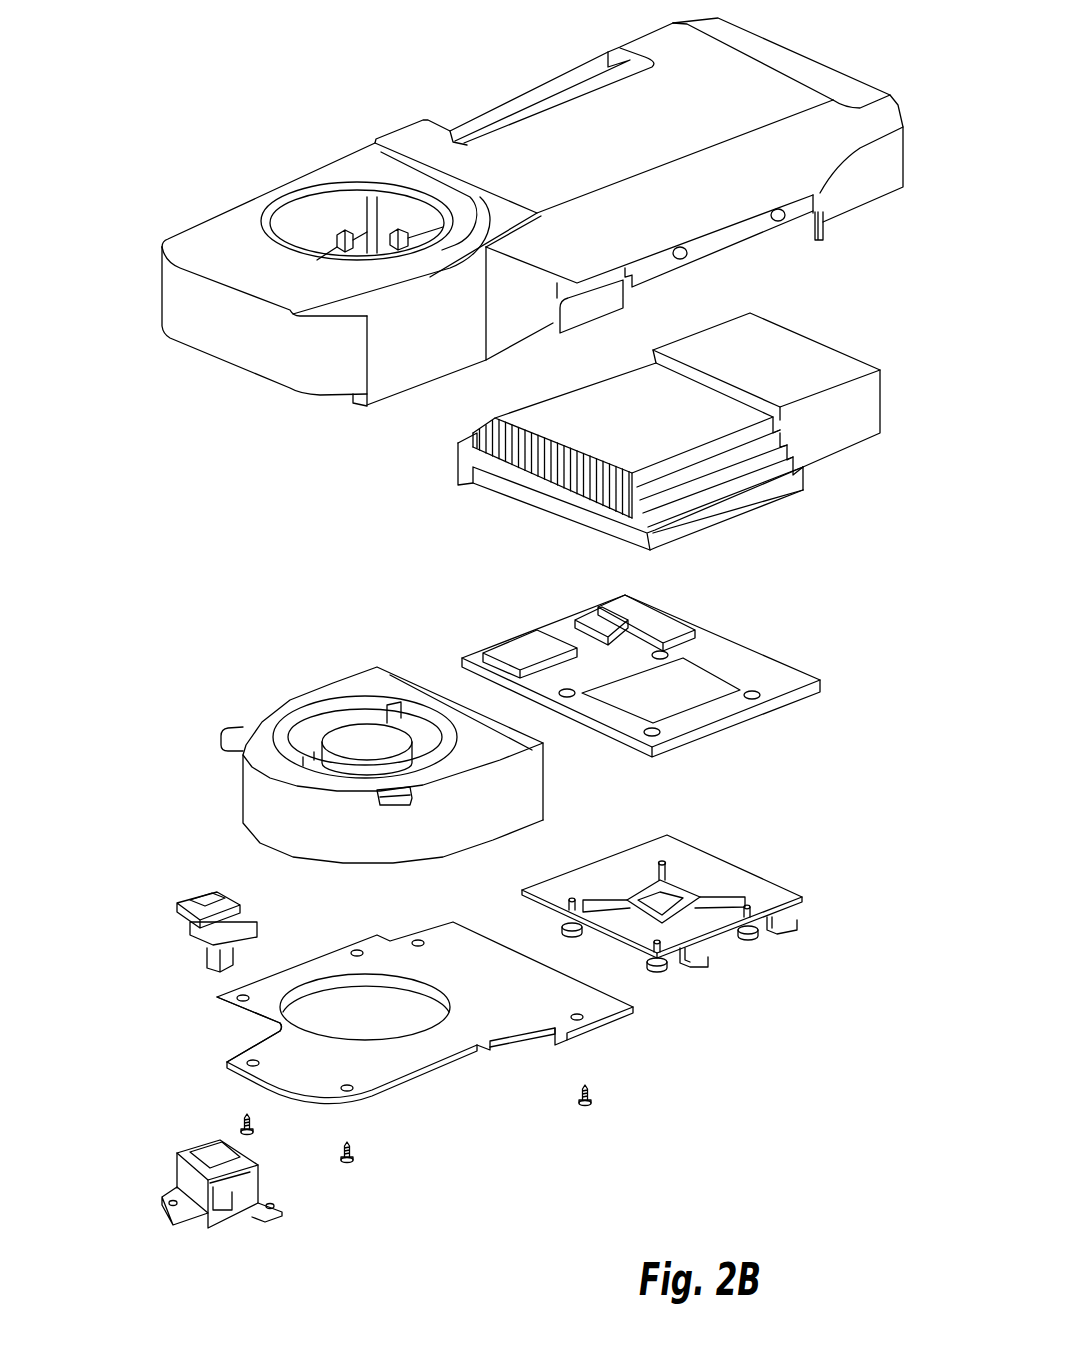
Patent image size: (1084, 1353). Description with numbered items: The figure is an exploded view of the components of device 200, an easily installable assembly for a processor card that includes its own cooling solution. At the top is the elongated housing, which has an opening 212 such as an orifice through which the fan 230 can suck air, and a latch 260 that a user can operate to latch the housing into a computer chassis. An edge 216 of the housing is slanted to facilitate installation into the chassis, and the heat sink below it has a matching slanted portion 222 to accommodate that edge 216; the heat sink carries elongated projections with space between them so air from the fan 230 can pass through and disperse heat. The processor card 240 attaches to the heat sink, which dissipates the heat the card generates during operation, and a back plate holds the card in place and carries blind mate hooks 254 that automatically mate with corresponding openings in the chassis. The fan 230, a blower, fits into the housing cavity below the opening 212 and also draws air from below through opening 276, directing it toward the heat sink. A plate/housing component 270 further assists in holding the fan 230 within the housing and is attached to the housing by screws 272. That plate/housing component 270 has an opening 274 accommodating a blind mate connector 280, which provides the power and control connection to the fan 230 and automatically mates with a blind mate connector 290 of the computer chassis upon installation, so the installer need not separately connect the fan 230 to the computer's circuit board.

The device 200 is at (296, 15).
The opening 212 is at (313, 210).
The edge 216 is at (800, 173).
The slanted portion 222 is at (690, 483).
The fan 230 is at (327, 693).
The processor card 240 is at (737, 652).
The blind mate hooks 254 is at (707, 960).
The latch 260 is at (517, 102).
The plate/housing component 270 is at (338, 965).
The screws 272 is at (573, 1090).
The opening 274 is at (262, 1032).
The opening 276 is at (387, 990).
The blind mate connector 280 is at (207, 893).
The blind mate connector 290 is at (192, 1143).